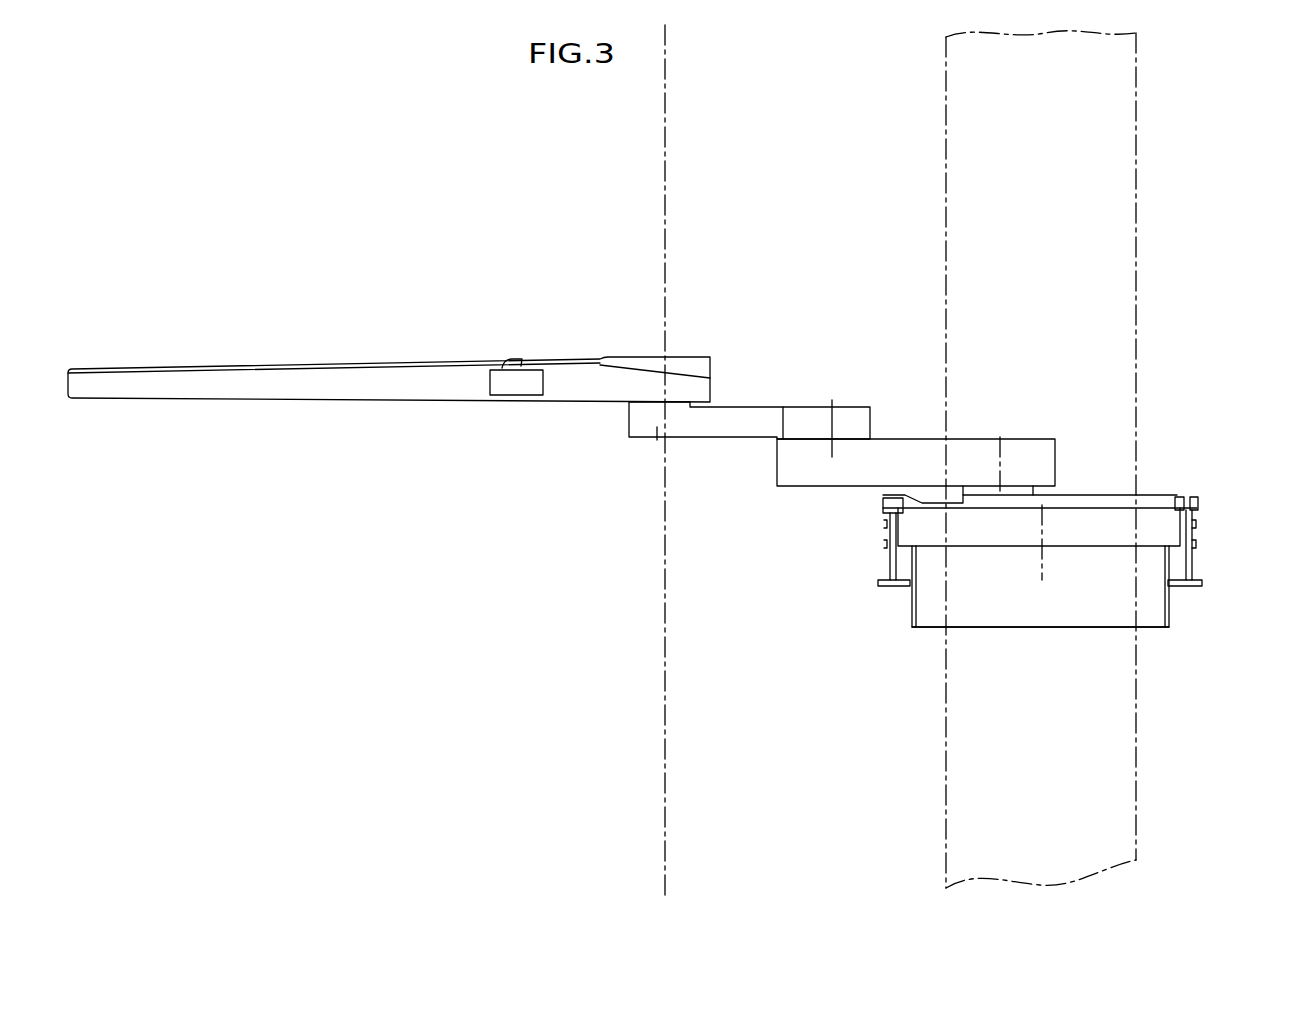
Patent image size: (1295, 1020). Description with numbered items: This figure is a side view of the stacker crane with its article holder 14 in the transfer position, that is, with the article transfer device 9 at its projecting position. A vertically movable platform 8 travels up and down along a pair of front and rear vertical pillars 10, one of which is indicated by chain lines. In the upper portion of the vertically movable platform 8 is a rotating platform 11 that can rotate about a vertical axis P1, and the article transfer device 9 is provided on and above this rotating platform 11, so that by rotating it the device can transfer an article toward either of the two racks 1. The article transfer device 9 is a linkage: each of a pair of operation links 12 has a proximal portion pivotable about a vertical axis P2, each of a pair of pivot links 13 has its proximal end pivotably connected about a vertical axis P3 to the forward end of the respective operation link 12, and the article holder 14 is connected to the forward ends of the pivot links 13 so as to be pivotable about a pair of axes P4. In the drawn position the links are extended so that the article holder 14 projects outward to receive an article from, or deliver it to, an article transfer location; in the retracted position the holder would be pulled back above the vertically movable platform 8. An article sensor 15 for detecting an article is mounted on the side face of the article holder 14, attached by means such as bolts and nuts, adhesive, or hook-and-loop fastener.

The rack 1 is at (669, 145).
The vertically movable platform 8 is at (1150, 620).
The article transfer device 9 is at (635, 478).
The vertical pillar 10 is at (1137, 190).
The rotating platform 11 is at (912, 528).
The operation link 12 is at (797, 484).
The pivot link 13 is at (743, 420).
The article holder 14 is at (197, 385).
The article sensor 15 is at (517, 383).
The vertical axis P1 is at (1042, 563).
The vertical axis P2 is at (1002, 432).
The vertical axis P3 is at (832, 400).
The axis P4 is at (657, 427).